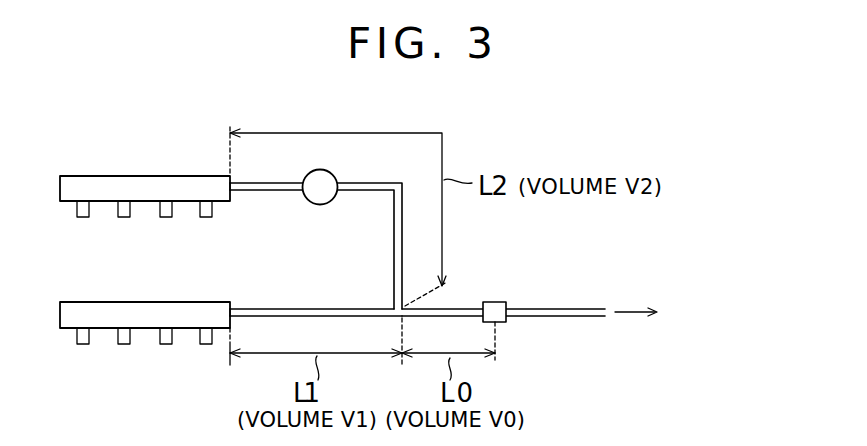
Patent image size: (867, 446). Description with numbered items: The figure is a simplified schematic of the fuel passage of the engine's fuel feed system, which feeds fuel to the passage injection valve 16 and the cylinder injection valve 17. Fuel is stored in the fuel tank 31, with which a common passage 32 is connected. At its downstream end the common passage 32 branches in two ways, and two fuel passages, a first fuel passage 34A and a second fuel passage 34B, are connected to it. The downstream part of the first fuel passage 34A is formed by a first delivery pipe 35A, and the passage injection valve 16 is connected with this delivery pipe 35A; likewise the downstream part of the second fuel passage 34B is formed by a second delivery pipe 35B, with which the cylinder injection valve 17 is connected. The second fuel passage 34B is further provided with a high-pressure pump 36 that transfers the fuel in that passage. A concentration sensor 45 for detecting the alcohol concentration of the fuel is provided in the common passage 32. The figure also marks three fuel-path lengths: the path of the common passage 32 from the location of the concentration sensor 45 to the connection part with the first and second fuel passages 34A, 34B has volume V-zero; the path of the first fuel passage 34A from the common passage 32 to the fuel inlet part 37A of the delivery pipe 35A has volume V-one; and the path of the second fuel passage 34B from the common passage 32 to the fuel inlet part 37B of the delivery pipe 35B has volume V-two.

The passage injection valve 16 is at (127, 345).
The cylinder injection valve 17 is at (127, 218).
The fuel tank 31 is at (716, 310).
The common passage 32 is at (428, 317).
The first fuel passage 34A is at (310, 308).
The second fuel passage 34B is at (350, 193).
The first delivery pipe 35A is at (128, 284).
The second delivery pipe 35B is at (137, 175).
The high-pressure pump 36 is at (335, 173).
The fuel inlet part 37A is at (244, 306).
The fuel inlet part 37B is at (234, 197).
The concentration sensor 45 is at (493, 302).